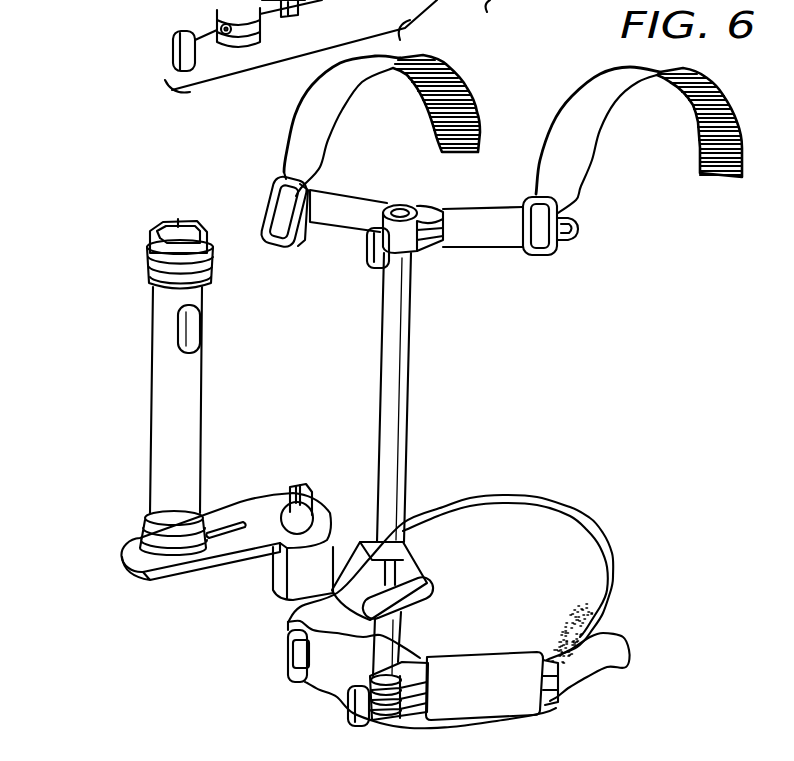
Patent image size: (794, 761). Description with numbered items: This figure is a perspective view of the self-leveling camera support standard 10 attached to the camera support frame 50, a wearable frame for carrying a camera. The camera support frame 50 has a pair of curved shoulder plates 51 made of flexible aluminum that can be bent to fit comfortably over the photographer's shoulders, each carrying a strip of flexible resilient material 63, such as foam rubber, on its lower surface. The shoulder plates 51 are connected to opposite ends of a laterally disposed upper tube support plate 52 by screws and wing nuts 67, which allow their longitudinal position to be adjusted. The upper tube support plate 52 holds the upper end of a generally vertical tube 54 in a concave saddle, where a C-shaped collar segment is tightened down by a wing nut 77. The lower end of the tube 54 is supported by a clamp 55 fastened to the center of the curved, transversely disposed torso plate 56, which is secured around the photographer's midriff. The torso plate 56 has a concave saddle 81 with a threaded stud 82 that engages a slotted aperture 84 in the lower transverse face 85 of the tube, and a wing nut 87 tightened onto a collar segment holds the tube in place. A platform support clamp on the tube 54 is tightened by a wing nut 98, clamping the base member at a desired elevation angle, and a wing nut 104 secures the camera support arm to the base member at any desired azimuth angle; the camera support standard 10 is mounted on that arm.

The self-leveling camera support standard 10 is at (146, 357).
The camera support frame 50 is at (530, 236).
The curved shoulder plates 51 is at (300, 110).
The upper tube support plate 52 is at (370, 193).
The tube 54 is at (405, 390).
The clamp 55 is at (401, 39).
The torso plate 56 is at (473, 652).
The strip of flexible resilient material 63 is at (423, 100).
The wing nuts 67 is at (268, 245).
The wing nut 77 is at (368, 265).
The concave saddle 81 is at (397, 0).
The threaded stud 82 is at (345, 0).
The slotted aperture 84 is at (275, 12).
The lower transverse face 85 is at (292, 18).
The wing nut 87 is at (180, 31).
The wing nut 98 is at (413, 576).
The wing nut 104 is at (300, 485).